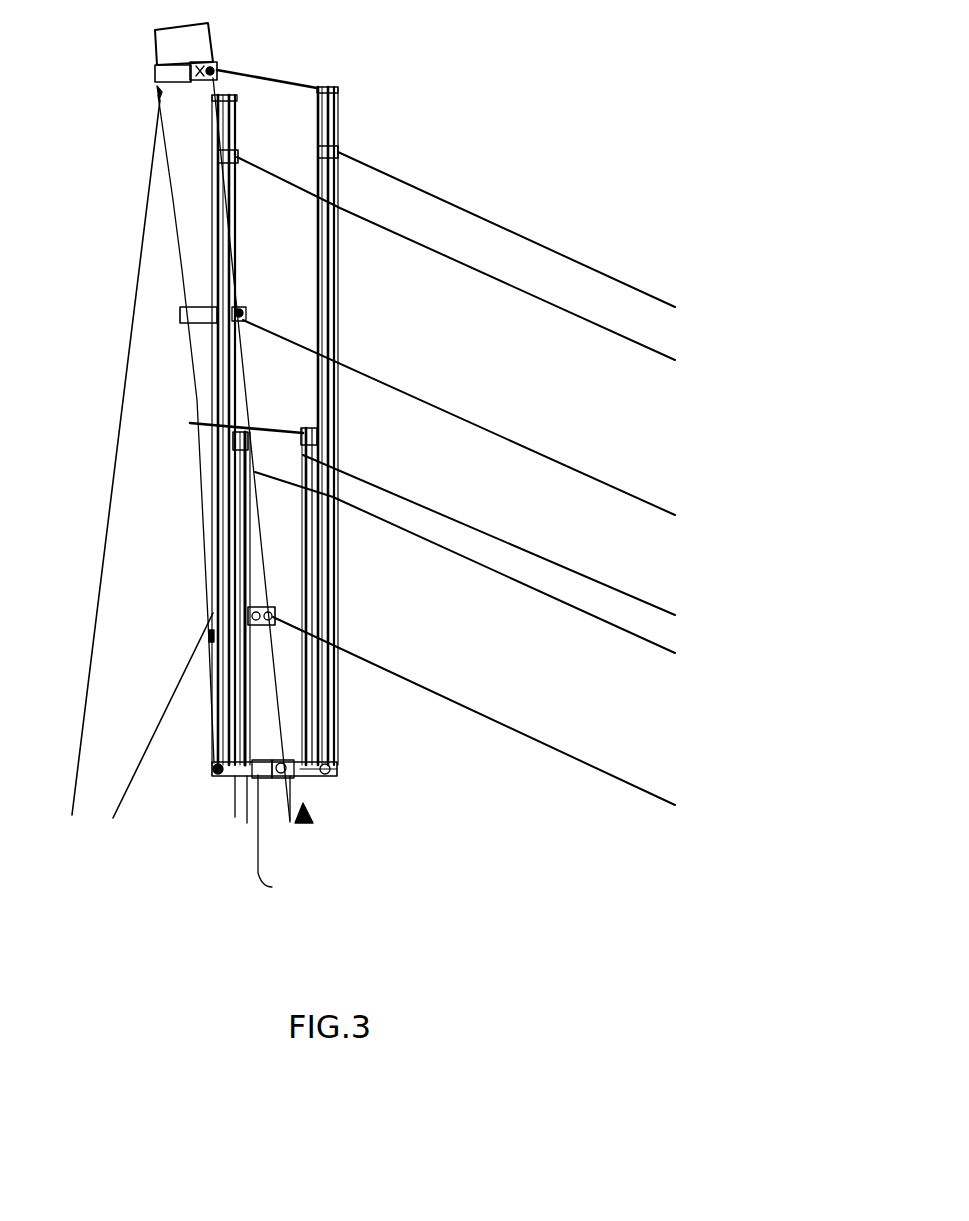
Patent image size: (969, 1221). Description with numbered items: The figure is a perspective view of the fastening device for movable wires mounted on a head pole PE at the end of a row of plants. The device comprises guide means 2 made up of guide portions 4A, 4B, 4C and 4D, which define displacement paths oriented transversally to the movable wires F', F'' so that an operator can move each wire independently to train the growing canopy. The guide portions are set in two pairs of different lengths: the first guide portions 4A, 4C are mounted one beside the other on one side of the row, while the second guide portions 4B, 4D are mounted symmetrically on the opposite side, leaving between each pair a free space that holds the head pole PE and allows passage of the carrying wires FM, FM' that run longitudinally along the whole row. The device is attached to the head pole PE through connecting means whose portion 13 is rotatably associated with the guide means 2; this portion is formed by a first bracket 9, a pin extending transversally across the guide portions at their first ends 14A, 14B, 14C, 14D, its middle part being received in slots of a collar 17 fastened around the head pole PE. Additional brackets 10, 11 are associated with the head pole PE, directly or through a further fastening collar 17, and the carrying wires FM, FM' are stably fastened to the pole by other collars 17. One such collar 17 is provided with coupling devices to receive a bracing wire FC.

The head pole PE is at (160, 45).
The collar 17 is at (153, 78).
The bracket 11 is at (245, 73).
The guide means 2 is at (301, 469).
The first guide portion 4A is at (237, 133).
The second guide portion 4B is at (340, 104).
The first guide portion 4C is at (250, 480).
The second guide portion 4D is at (302, 578).
The bracket 10 is at (200, 428).
The first bracket 9 is at (251, 488).
The first end of guide portion 14A is at (217, 773).
The first end of guide portion 14B is at (330, 770).
The first end of guide portion 14C is at (245, 777).
The first end of guide portion 14D is at (320, 773).
The portion of the connecting means 13 is at (305, 825).
The movable wire F'' is at (456, 256).
The carrying wire FM is at (459, 417).
The movable wire F' is at (465, 554).
The carrying wire FM' is at (474, 711).
The bracing wire FC is at (118, 425).